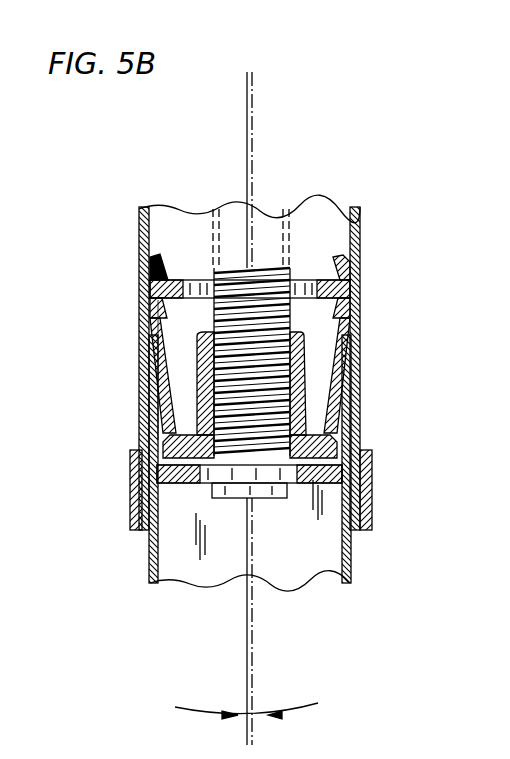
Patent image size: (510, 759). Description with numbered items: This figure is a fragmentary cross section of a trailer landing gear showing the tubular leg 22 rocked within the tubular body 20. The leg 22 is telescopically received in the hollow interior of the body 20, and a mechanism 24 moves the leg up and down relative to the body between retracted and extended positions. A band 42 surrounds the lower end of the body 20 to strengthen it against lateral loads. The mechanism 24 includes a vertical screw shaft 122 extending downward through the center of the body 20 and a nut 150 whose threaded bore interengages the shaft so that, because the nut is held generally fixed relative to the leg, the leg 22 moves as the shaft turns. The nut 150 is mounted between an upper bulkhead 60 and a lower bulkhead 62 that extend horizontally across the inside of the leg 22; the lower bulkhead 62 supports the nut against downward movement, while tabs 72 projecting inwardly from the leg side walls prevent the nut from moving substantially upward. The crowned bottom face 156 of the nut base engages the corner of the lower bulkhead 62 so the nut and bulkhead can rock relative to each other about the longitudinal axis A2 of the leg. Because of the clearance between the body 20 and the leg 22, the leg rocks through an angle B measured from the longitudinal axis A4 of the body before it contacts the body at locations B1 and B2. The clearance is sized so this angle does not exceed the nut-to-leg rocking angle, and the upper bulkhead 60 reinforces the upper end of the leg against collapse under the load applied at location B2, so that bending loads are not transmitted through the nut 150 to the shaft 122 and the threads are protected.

The tubular body 20 is at (358, 232).
The tubular leg 22 is at (352, 578).
The mechanism 24 is at (157, 360).
The band 42 is at (373, 498).
The upper bulkhead 60 is at (178, 278).
The lower bulkhead 62 is at (140, 500).
The tabs 72 is at (332, 418).
The screw shaft 122 is at (287, 213).
The nut 150 is at (330, 362).
The bottom face 156 is at (293, 484).
The longitudinal axis of the leg A2 is at (255, 108).
The longitudinal axis of the body A4 is at (258, 688).
The angle β B is at (263, 713).
The contact location B1 is at (140, 532).
The contact location B2 is at (362, 270).